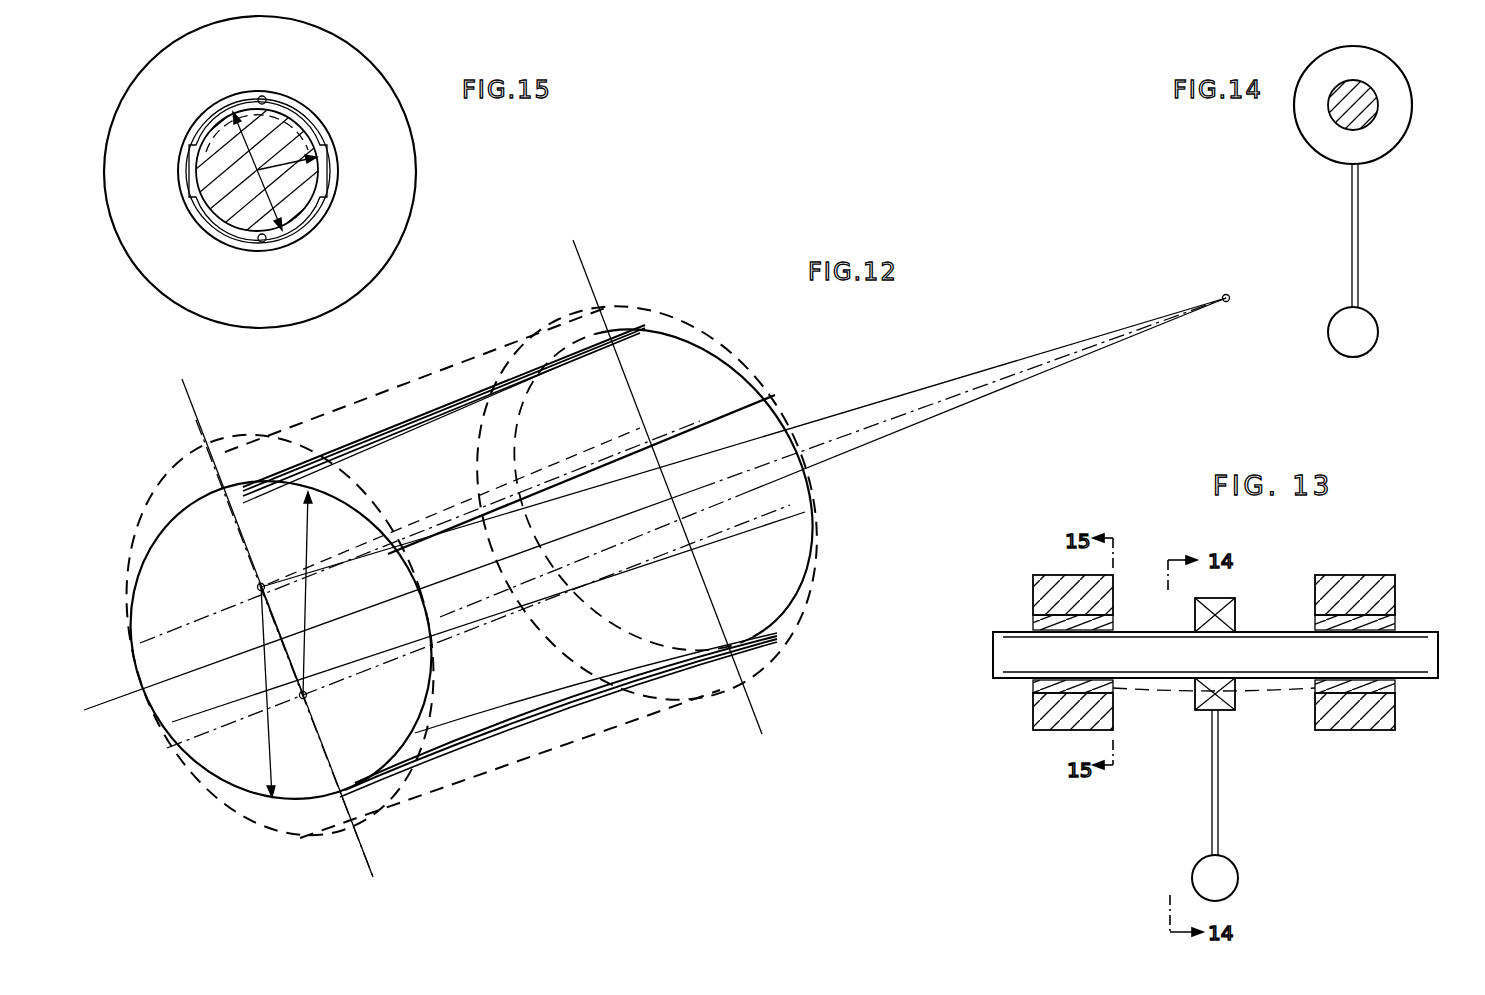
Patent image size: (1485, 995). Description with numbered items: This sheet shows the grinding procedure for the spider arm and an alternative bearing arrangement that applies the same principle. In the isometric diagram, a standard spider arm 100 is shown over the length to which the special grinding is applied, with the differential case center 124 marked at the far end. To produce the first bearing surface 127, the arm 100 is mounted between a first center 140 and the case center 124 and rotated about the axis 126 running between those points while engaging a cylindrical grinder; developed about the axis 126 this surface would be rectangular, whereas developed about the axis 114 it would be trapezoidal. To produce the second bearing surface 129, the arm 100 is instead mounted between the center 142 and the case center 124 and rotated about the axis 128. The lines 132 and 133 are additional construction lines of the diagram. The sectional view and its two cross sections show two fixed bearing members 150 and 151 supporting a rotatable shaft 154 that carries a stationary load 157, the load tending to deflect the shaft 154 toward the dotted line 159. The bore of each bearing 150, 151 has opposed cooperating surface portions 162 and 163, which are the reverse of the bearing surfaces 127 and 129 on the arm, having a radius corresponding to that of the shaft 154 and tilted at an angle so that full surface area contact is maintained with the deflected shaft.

In FIG. 12, the spider arm 100 is at (476, 558).
In FIG. 12, the axis 114 is at (1007, 373).
In FIG. 12, the differential case center 124 is at (1224, 293).
In FIG. 12, the axis 126 is at (983, 403).
In FIG. 12, the first bearing surface 127 is at (413, 413).
In FIG. 12, the axis 128 is at (920, 387).
In FIG. 12, the second bearing surface 129 is at (556, 740).
In FIG. 12, the hidden edge line 132 is at (488, 493).
In FIG. 12, the longitudinal line 133 is at (605, 475).
In FIG. 12, the first center 140 is at (306, 697).
In FIG. 12, the center 142 is at (258, 586).
In FIG. 15, the fixed bearing member 150 is at (407, 137).
In FIG. 14, the fixed bearing member 150 is at (1353, 105).
In FIG. 13, the fixed bearing member 150 is at (1040, 583).
In FIG. 13, the fixed bearing member 151 is at (1390, 593).
In FIG. 15, the rotatable shaft 154 is at (285, 118).
In FIG. 14, the rotatable shaft 154 is at (1372, 101).
In FIG. 13, the rotatable shaft 154 is at (1257, 636).
In FIG. 14, the stationary load 157 is at (1368, 331).
In FIG. 13, the stationary load 157 is at (1232, 878).
In FIG. 15, the dotted line 159 is at (320, 192).
In FIG. 13, the dotted line 159 is at (1173, 700).
In FIG. 15, the cooperating surface portion 162 is at (262, 96).
In FIG. 13, the cooperating surface portion 162 is at (1087, 627).
In FIG. 15, the cooperating surface portion 163 is at (263, 242).
In FIG. 13, the cooperating surface portion 163 is at (1093, 690).